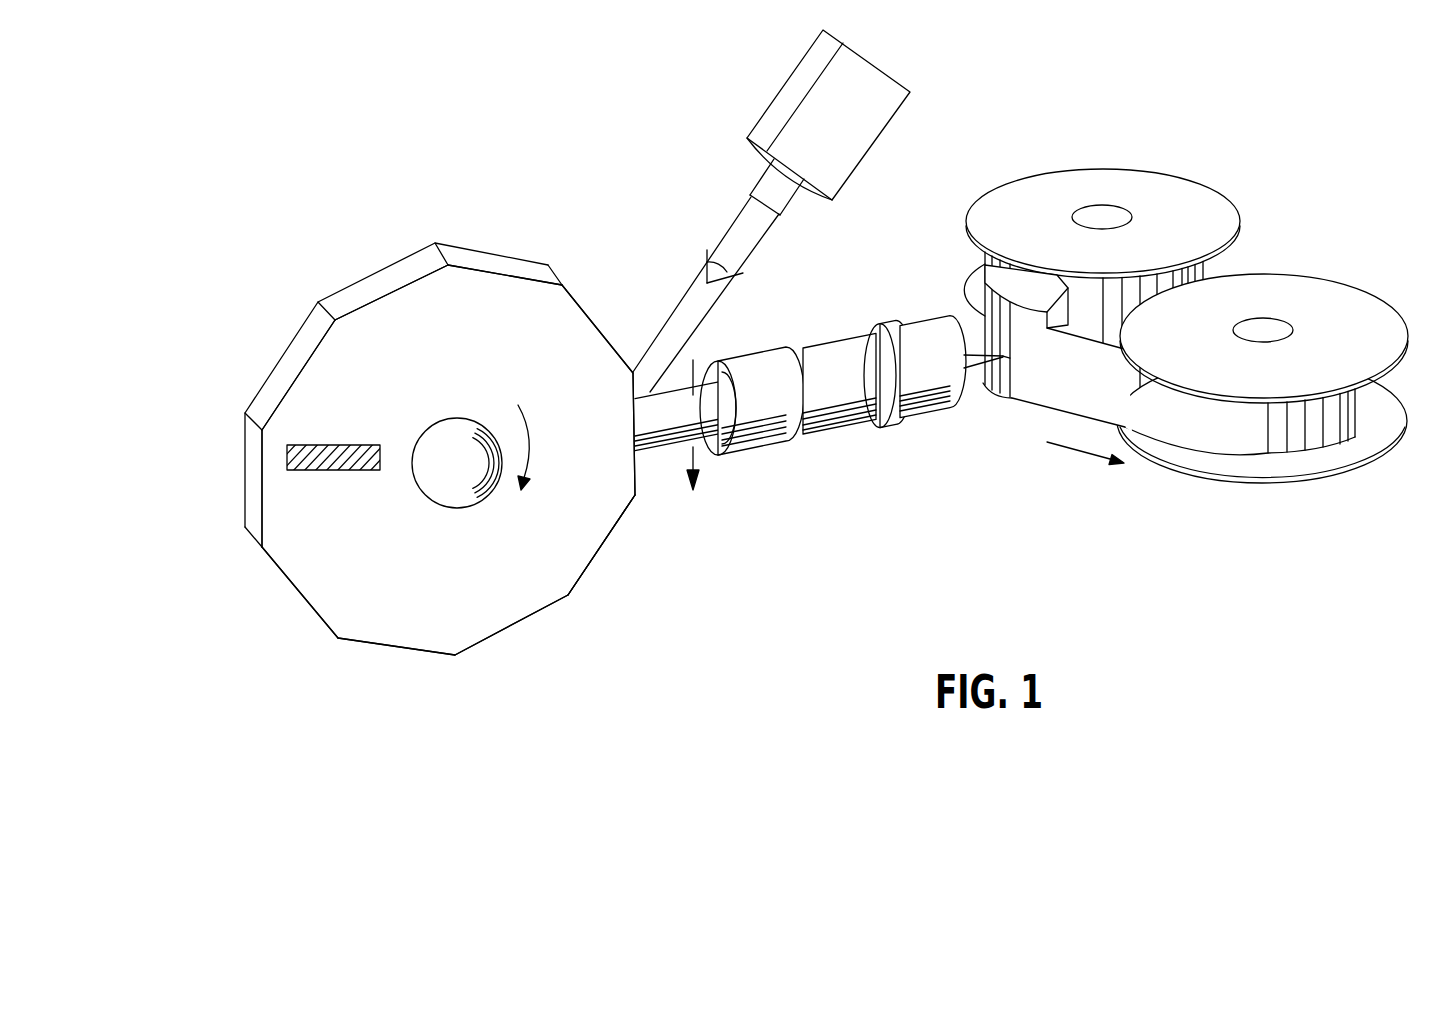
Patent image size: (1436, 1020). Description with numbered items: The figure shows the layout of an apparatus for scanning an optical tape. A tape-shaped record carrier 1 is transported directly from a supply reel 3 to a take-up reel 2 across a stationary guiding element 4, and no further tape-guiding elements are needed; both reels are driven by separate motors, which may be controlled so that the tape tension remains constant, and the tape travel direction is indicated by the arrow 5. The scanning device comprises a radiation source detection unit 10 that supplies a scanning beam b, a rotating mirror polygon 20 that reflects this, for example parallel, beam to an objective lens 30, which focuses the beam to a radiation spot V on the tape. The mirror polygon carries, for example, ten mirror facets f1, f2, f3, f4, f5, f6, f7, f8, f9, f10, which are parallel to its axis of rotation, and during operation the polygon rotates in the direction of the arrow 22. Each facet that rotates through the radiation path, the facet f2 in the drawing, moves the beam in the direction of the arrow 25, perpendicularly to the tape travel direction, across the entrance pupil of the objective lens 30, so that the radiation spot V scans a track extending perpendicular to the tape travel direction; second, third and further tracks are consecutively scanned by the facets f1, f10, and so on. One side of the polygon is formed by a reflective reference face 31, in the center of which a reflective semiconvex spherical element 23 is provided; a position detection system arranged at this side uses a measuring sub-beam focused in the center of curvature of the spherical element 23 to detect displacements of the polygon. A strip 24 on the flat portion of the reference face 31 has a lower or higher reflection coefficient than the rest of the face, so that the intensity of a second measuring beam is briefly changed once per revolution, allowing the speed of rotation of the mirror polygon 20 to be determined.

The tape-shaped record carrier 1 is at (1062, 412).
The take-up reel 2 is at (1262, 421).
The supply reel 3 is at (1148, 187).
The stationary guiding element 4 is at (998, 280).
The tape travel direction arrow 5 is at (1082, 450).
The radiation source detection unit 10 is at (803, 57).
The rotating mirror polygon 20 is at (457, 243).
The rotation direction arrow 22 is at (530, 436).
The spherical element 23 is at (432, 483).
The strip 24 is at (293, 468).
The beam movement arrow 25 is at (695, 458).
The objective lens 30 is at (848, 425).
The reference face 31 is at (584, 548).
The mirror facet f1 is at (607, 337).
The mirror facet f2 is at (637, 473).
The mirror facet f3 is at (620, 517).
The mirror facet f4 is at (515, 625).
The mirror facet f5 is at (390, 650).
The mirror facet f6 is at (302, 603).
The mirror facet f7 is at (243, 468).
The mirror facet f8 is at (283, 355).
The mirror facet f9 is at (358, 280).
The mirror facet f10 is at (510, 258).
The radiation spot V is at (1008, 385).
The scanning beam b is at (716, 256).